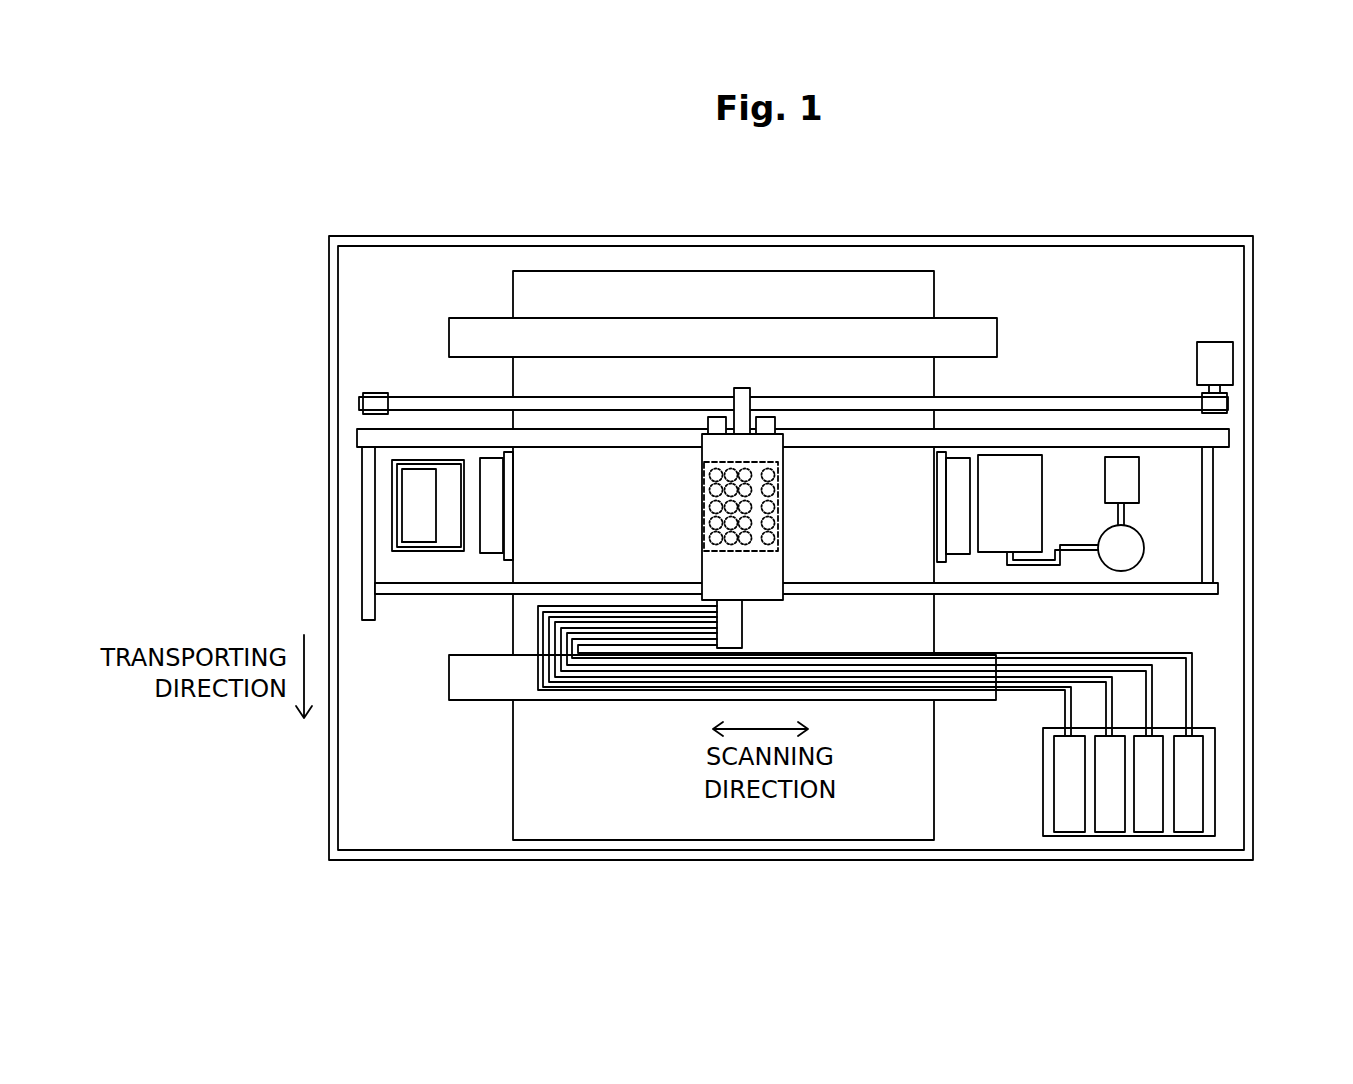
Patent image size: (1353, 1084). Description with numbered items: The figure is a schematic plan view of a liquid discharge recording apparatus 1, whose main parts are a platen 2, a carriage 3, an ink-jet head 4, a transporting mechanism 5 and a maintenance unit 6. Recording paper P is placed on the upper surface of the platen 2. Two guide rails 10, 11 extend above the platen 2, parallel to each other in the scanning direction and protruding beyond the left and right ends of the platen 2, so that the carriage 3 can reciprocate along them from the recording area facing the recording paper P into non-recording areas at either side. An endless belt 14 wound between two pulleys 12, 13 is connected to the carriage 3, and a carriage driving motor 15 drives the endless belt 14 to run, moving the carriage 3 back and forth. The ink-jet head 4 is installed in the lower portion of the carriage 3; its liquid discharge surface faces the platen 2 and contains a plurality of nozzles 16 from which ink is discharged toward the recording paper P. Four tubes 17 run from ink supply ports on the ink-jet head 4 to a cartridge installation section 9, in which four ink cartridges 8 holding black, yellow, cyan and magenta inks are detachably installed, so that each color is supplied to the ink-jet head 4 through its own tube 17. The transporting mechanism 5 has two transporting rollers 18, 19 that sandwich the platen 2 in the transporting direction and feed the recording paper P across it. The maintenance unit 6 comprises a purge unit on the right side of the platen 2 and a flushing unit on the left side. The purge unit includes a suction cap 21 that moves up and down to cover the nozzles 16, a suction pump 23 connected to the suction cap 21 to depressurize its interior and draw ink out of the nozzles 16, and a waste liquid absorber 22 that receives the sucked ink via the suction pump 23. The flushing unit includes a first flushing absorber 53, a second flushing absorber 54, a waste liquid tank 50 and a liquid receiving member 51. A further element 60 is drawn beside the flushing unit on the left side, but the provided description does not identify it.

The liquid discharge recording apparatus 1 is at (1163, 208).
The platen 2 is at (494, 543).
The carriage 3 is at (764, 580).
The ink-jet head 4 is at (791, 506).
The transporting mechanism 5 is at (880, 455).
The maintenance unit 6 is at (1146, 505).
The ink cartridge 8 is at (1197, 810).
The cartridge installation section 9 is at (1169, 825).
The guide rail 10 is at (1150, 438).
The guide rail 11 is at (1200, 593).
The pulley 12 is at (1230, 396).
The pulley 13 is at (377, 392).
The endless belt 14 is at (1066, 402).
The carriage driving motor 15 is at (1223, 362).
The nozzle 16 is at (778, 486).
The tube 17 is at (647, 655).
The transporting roller 18 is at (955, 327).
The transporting roller 19 is at (477, 672).
The suction cap 21 is at (1030, 527).
The waste liquid absorber 22 is at (1115, 478).
The suction pump 23 is at (1144, 548).
The waste liquid tank 50 is at (367, 454).
The liquid receiving member 51 is at (402, 508).
The first flushing absorber 53 is at (450, 510).
The second flushing absorber 54 is at (408, 533).
The wiping blade 60 is at (512, 460).
The recording medium P is at (522, 780).